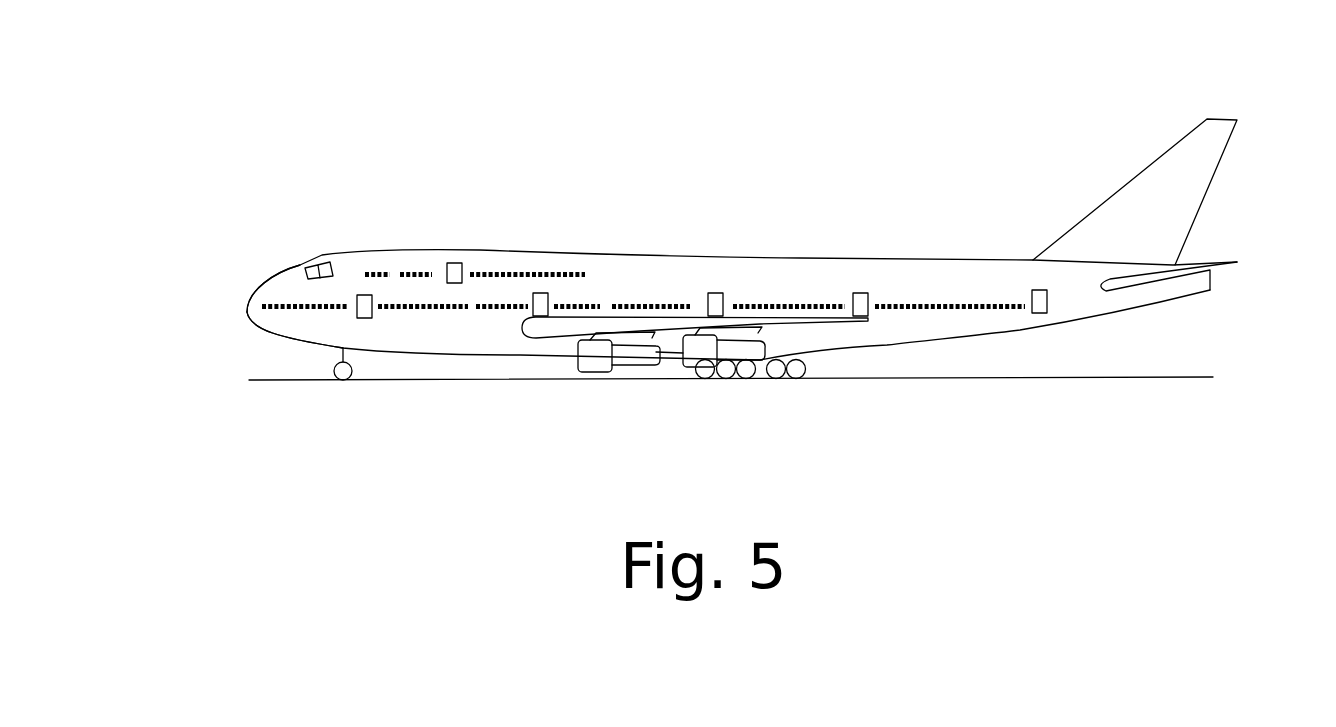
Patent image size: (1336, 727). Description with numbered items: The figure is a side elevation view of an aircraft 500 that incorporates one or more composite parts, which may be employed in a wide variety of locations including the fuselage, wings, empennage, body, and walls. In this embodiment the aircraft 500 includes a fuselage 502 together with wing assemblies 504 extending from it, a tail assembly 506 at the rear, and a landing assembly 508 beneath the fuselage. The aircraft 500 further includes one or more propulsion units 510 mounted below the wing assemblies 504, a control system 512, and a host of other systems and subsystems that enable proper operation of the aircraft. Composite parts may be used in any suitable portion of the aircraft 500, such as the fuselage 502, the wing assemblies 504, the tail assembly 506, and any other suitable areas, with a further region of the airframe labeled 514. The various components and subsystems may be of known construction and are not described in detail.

The aircraft 500 is at (265, 80).
The fuselage 502 is at (897, 345).
The wing assemblies 504 is at (548, 336).
The tail assembly 506 is at (1125, 163).
The landing assembly 508 is at (738, 392).
The propulsion units 510 is at (590, 372).
The control system 512 is at (247, 338).
The upper deck 514 is at (588, 240).